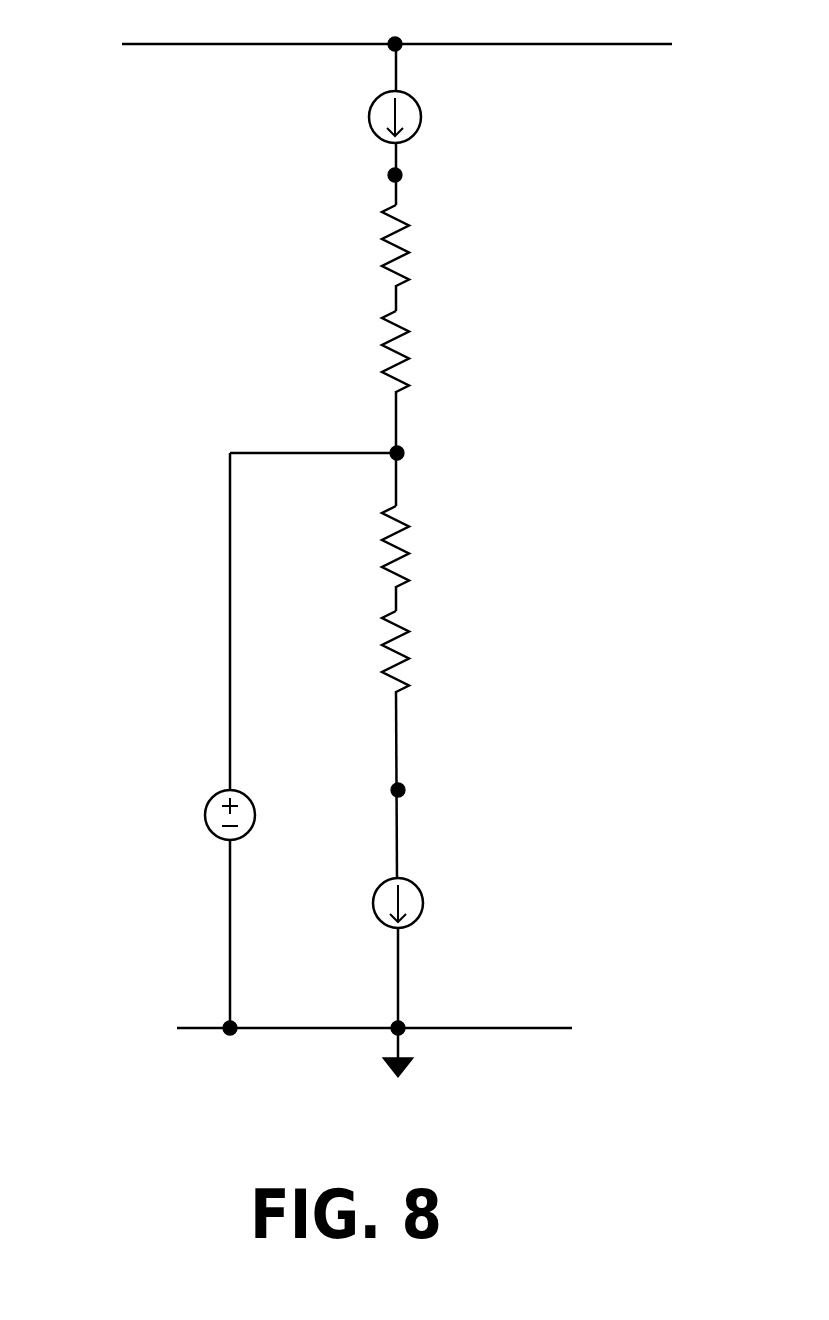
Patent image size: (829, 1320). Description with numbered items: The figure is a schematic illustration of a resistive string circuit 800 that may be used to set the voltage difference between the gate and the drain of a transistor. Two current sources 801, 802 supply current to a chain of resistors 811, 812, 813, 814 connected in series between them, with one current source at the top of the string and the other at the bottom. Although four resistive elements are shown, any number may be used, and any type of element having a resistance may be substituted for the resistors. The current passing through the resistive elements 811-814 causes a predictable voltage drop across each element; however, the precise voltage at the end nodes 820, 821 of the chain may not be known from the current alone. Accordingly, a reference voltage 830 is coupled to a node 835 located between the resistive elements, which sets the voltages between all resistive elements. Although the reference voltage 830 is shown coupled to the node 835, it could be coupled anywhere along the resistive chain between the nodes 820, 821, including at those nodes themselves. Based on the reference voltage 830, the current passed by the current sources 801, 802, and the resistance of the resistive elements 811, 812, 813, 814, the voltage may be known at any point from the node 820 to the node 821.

The resistive string circuit 800 is at (88, 745).
The current source 801 is at (454, 109).
The current source 802 is at (454, 892).
The resistor 811 is at (431, 245).
The resistor 812 is at (431, 351).
The resistor 813 is at (431, 546).
The resistor 814 is at (431, 651).
The node 820 is at (434, 179).
The node 821 is at (436, 792).
The reference voltage 830 is at (263, 808).
The node 835 is at (435, 454).